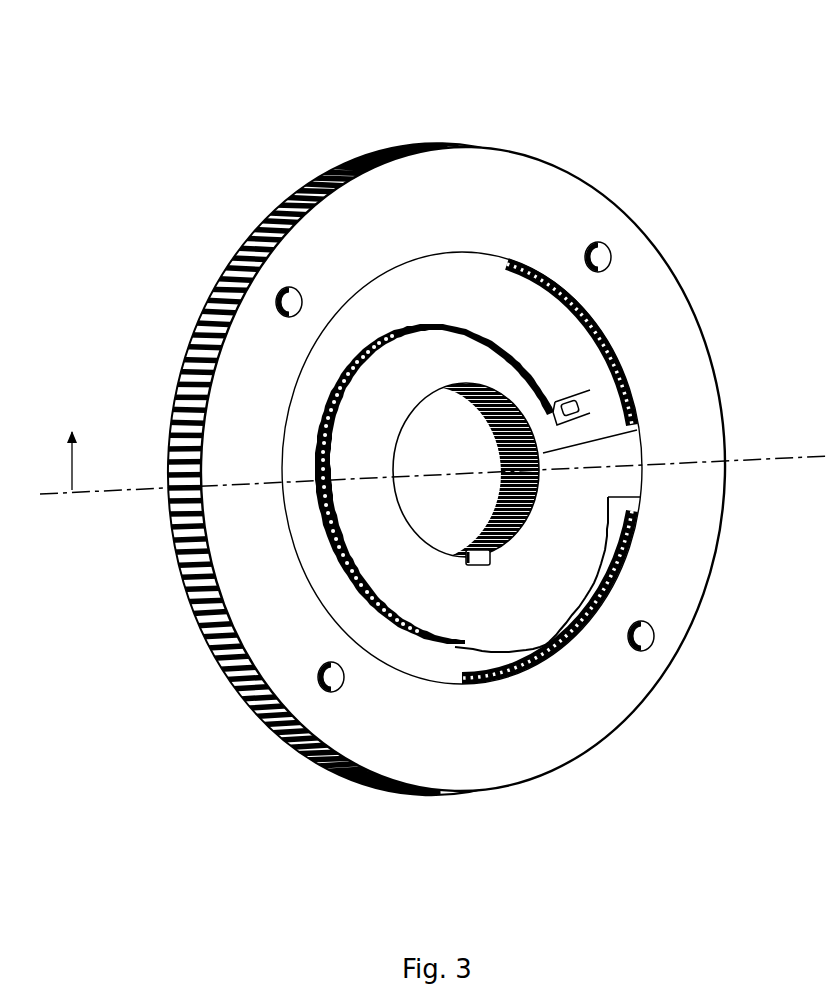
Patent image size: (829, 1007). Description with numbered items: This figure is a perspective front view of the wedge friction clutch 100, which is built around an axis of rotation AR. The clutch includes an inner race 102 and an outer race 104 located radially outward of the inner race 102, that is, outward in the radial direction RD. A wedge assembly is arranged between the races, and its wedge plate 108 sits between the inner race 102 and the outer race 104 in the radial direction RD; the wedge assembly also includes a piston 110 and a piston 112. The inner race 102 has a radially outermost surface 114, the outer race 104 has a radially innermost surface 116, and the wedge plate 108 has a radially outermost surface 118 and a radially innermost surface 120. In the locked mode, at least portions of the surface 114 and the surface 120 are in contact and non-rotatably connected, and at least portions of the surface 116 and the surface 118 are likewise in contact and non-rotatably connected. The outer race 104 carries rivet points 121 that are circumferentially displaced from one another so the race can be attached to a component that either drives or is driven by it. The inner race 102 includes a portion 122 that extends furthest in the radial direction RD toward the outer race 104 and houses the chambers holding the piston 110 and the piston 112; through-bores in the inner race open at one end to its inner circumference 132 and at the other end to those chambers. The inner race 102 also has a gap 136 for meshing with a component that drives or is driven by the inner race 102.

The wedge friction clutch 100 is at (628, 72).
The inner race 102 is at (380, 573).
The outer race 104 is at (608, 222).
The wedge plate 108 is at (294, 442).
The piston 110 is at (577, 390).
The piston 112 is at (650, 503).
The radially outermost surface 114 is at (483, 638).
The radially innermost surface 116 is at (597, 613).
The radially outermost surface 118 is at (352, 297).
The radially innermost surface 120 is at (360, 350).
The rivet points 121 is at (355, 680).
The portion 122 is at (622, 418).
The inner circumference 132 is at (488, 424).
The gap 136 is at (490, 559).
The radial direction RD is at (78, 463).
The axis of rotation AR is at (130, 495).